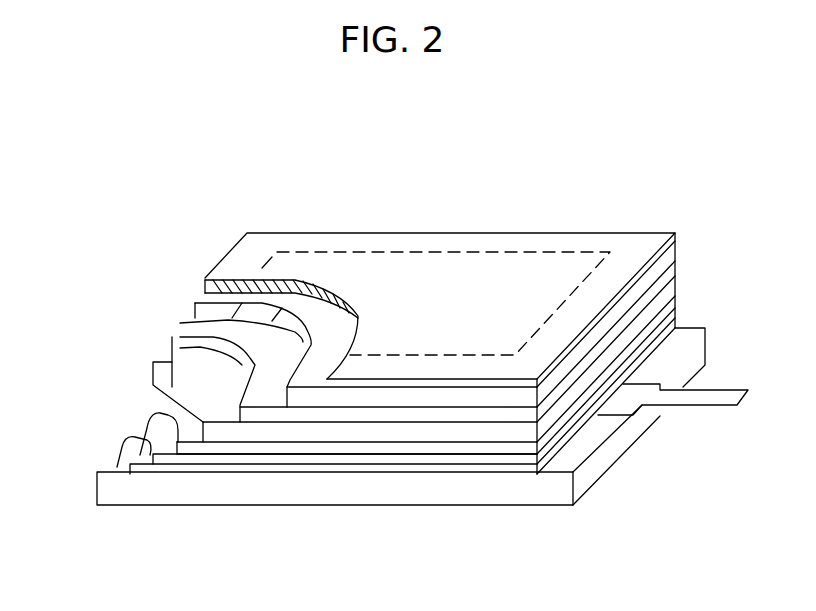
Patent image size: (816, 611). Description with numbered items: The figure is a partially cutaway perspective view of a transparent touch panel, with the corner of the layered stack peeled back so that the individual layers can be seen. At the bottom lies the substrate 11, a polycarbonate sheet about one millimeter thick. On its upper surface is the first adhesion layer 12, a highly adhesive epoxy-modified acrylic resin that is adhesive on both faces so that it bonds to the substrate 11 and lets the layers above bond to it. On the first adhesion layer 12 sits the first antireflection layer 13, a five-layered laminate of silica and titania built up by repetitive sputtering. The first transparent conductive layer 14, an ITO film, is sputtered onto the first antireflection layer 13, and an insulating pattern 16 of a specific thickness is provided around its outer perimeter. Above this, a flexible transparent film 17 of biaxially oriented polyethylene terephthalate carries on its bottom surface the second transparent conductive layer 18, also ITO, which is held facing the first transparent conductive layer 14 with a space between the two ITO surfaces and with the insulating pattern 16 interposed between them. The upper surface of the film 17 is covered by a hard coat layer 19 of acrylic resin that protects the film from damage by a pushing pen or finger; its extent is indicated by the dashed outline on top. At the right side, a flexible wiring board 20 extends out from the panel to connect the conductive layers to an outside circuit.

The substrate 11 is at (218, 498).
The first adhesion layer 12 is at (145, 458).
The first antireflection layer 13 is at (138, 417).
The first transparent conductive layer 14 is at (150, 398).
The insulating pattern 16 is at (207, 410).
The flexible transparent film 17 is at (205, 295).
The second transparent conductive layer 18 is at (195, 328).
The hard coat layer 19 is at (402, 254).
The flexible wiring board 20 is at (708, 400).